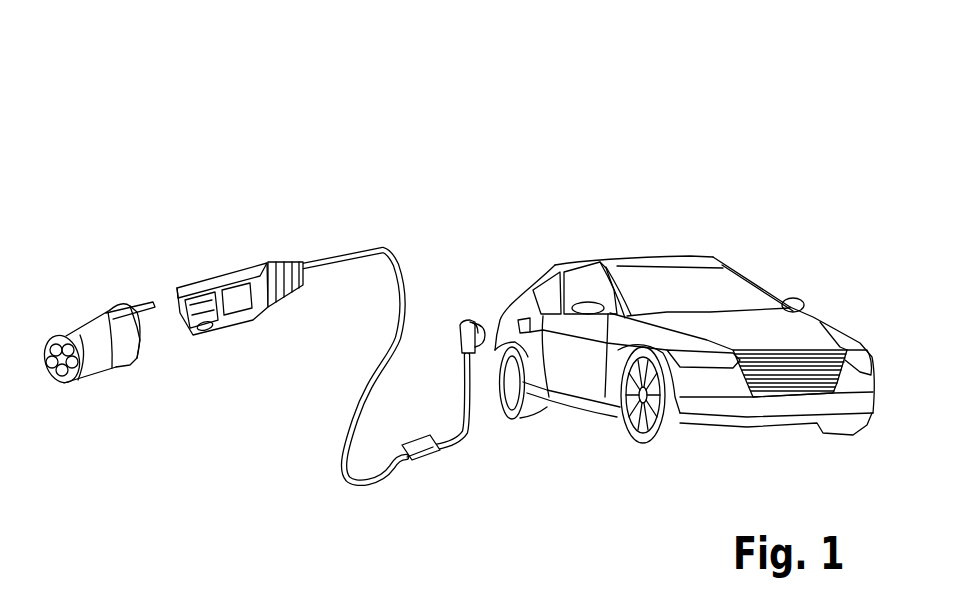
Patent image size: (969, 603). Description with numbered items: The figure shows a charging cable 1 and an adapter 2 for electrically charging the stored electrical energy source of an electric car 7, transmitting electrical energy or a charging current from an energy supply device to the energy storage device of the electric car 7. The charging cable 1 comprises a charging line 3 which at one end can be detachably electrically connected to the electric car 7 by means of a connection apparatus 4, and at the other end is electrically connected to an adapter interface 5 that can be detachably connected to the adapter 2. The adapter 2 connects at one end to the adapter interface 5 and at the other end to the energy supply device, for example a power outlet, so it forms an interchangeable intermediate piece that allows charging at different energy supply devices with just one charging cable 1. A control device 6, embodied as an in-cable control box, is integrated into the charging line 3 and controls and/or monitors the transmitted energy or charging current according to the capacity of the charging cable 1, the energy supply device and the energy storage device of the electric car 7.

The charging cable 1 is at (369, 195).
The adapter 2 is at (62, 263).
The charging line 3 is at (377, 383).
The connection apparatus 4 is at (460, 330).
The adapter interface 5 is at (203, 338).
The control device 6 is at (437, 457).
The electric car 7 is at (783, 333).